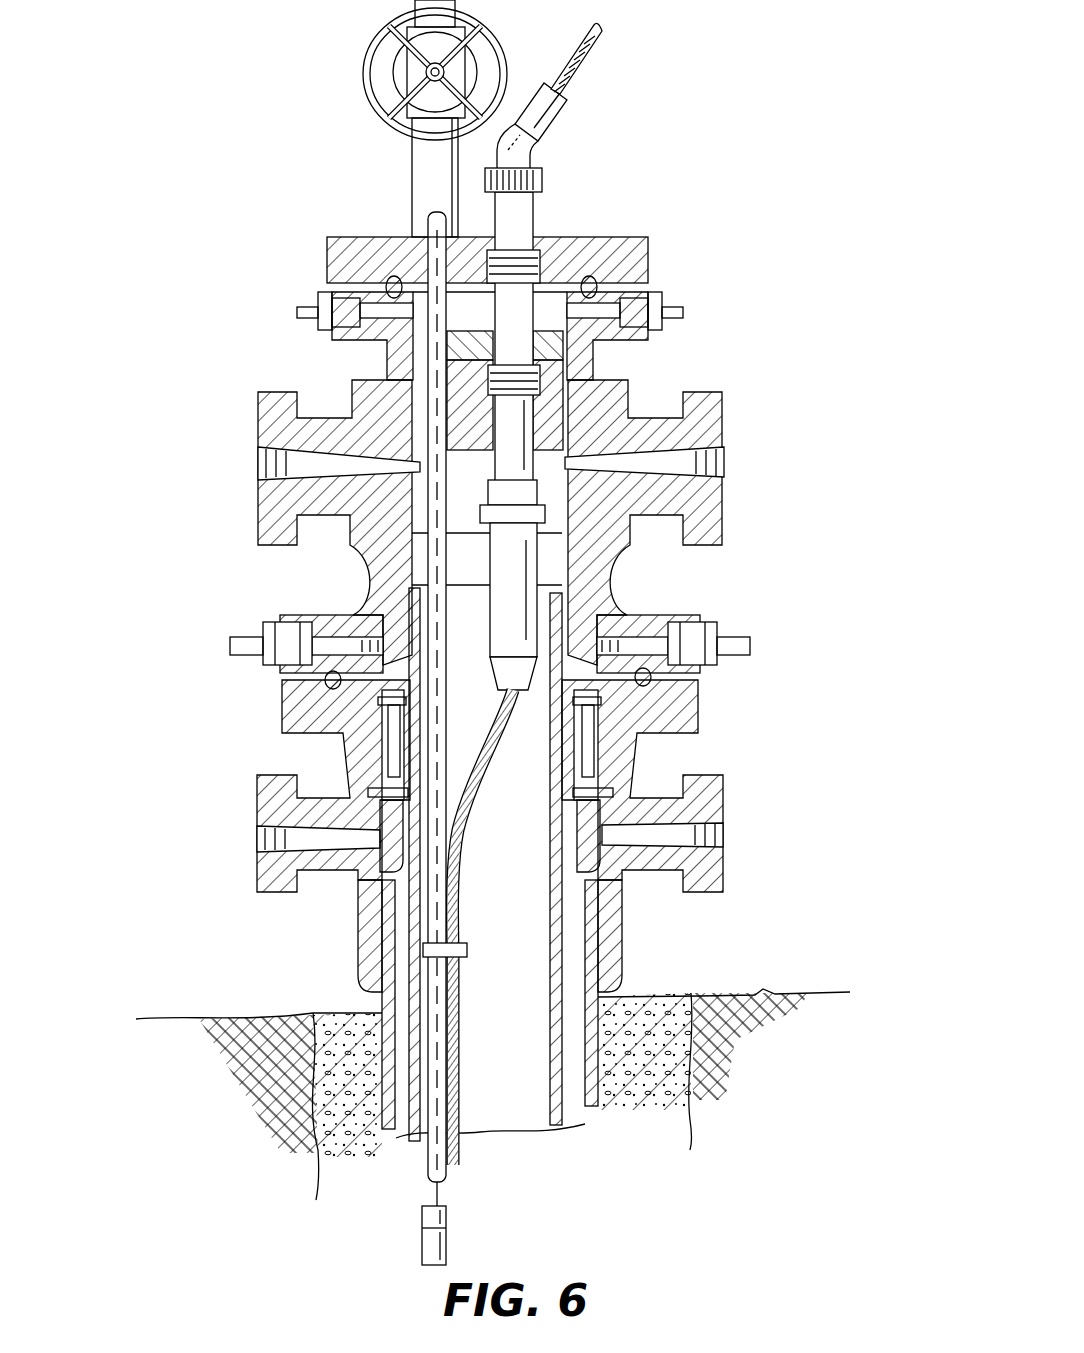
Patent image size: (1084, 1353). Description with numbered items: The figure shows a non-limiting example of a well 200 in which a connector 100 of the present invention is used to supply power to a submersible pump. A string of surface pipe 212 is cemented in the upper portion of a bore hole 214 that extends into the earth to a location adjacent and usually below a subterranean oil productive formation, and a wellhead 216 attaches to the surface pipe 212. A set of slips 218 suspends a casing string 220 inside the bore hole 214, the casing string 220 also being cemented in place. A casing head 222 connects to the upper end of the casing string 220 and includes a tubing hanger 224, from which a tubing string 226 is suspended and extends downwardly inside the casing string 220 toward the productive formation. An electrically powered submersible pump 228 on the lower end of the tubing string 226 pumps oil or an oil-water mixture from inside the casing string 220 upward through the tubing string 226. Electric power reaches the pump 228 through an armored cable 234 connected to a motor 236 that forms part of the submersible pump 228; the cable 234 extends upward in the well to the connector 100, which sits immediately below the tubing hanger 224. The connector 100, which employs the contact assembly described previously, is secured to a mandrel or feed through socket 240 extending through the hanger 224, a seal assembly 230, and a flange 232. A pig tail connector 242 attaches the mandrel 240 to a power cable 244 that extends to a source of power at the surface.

The connector 100 is at (483, 637).
The well 200 is at (498, 632).
The surface pipe 212 is at (598, 988).
The bore hole 214 is at (672, 1112).
The wellhead 216 is at (644, 760).
The slips 218 is at (387, 893).
The casing string 220 is at (565, 1094).
The casing head 222 is at (637, 383).
The tubing hanger 224 is at (468, 462).
The tubing string 226 is at (430, 743).
The submersible pump 228 is at (455, 1241).
The seal assembly 230 is at (462, 320).
The flange 232 is at (578, 236).
The armored cable 234 is at (466, 901).
The motor 236 is at (447, 1218).
The mandrel or feed through socket 240 is at (473, 451).
The pig tail connector 242 is at (566, 120).
The power cable 244 is at (572, 62).